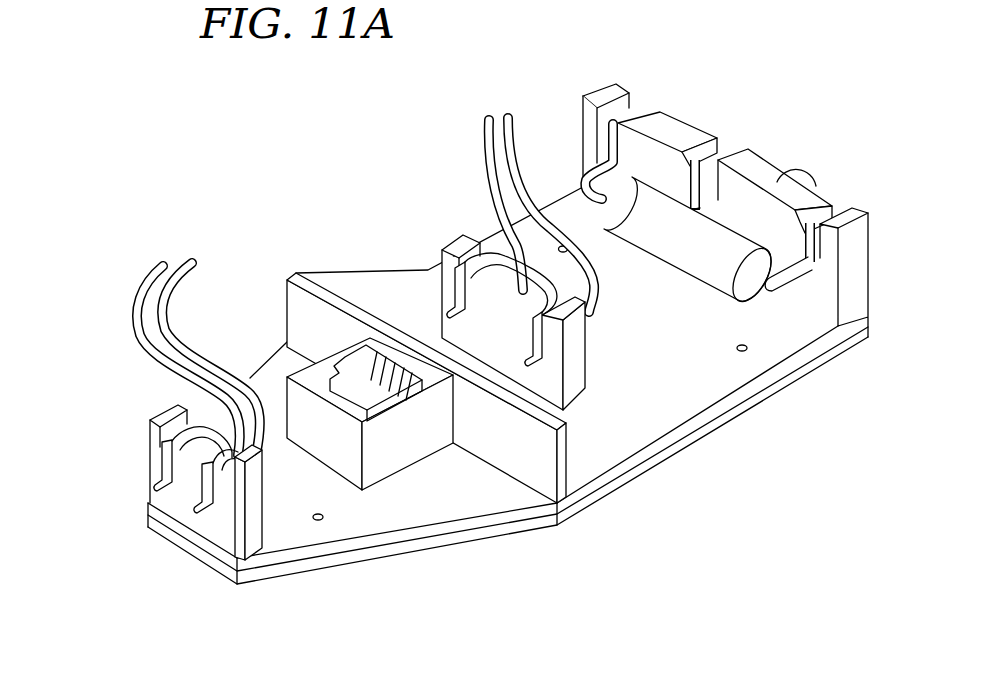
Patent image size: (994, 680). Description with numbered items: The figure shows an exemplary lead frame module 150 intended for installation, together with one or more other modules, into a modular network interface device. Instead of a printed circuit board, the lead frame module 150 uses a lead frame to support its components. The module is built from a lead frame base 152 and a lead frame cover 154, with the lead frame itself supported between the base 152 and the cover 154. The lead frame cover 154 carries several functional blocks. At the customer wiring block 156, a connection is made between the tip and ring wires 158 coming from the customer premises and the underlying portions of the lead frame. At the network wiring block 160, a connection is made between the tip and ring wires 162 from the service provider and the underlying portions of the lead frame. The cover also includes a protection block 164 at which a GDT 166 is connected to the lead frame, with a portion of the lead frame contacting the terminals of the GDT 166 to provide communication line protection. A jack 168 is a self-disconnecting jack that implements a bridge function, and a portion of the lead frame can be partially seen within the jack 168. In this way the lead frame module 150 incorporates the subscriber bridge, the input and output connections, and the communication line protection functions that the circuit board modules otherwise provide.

The lead frame module 150 is at (238, 122).
The lead frame base 152 is at (484, 540).
The lead frame cover 154 is at (393, 287).
The customer wiring block 156 is at (152, 455).
The tip and ring wires 158 is at (142, 260).
The network wiring block 160 is at (584, 349).
The second pair of leads 162 is at (480, 134).
The protection block 164 is at (678, 125).
The GDT 166 is at (697, 284).
The jack 168 is at (398, 390).